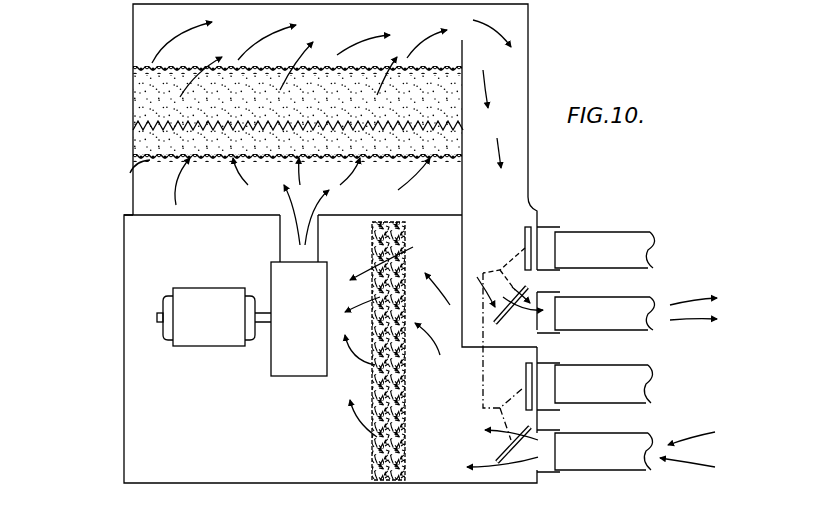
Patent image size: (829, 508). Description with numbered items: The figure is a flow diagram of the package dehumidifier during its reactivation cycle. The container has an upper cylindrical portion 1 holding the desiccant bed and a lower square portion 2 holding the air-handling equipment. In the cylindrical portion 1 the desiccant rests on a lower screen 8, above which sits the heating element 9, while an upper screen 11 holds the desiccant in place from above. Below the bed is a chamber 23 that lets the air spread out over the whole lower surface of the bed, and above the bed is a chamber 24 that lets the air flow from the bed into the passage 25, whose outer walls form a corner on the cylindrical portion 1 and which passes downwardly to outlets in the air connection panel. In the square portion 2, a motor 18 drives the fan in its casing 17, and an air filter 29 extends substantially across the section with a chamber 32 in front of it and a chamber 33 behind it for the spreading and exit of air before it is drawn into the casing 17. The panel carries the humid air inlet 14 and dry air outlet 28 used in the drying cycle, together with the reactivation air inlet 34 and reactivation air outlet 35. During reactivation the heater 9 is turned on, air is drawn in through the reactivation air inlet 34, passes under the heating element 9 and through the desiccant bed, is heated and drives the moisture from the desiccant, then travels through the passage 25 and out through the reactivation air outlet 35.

The cylindrical portion 1 is at (133, 195).
The square portion 2 is at (124, 332).
The screen 8 is at (133, 173).
The heating element 9 is at (153, 127).
The upper screen 11 is at (147, 72).
The humid air inlet 14 is at (640, 370).
The casing 17 is at (283, 352).
The motor 18 is at (187, 302).
The chamber below the desiccant bed 23 is at (205, 200).
The chamber above the desiccant bed 24 is at (178, 17).
The passage 25 is at (503, 188).
The dry air outlet 28 is at (642, 237).
The air filter 29 is at (377, 387).
The chamber in front of the air filter 32 is at (475, 370).
The chamber in back of the air filter 33 is at (371, 236).
The reactivation air inlet 34 is at (638, 442).
The reactivation air outlet 35 is at (643, 298).